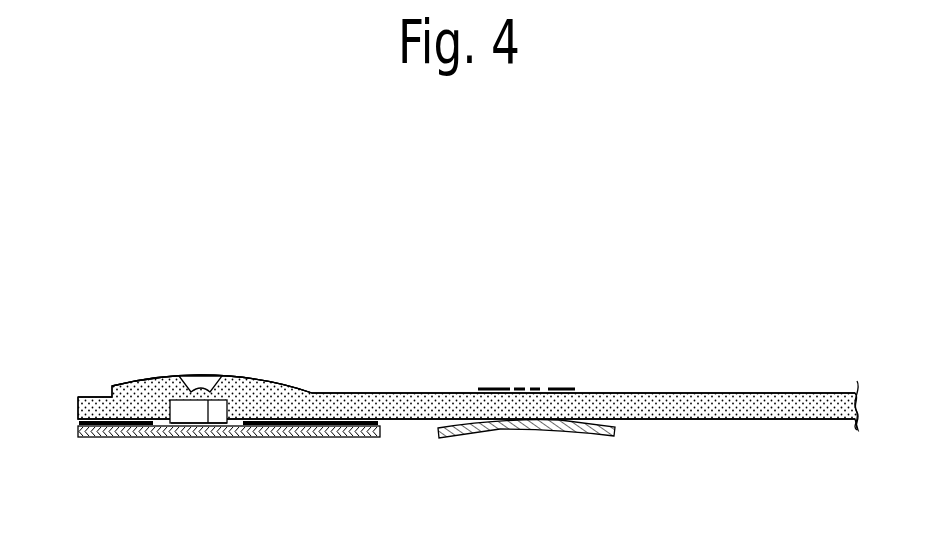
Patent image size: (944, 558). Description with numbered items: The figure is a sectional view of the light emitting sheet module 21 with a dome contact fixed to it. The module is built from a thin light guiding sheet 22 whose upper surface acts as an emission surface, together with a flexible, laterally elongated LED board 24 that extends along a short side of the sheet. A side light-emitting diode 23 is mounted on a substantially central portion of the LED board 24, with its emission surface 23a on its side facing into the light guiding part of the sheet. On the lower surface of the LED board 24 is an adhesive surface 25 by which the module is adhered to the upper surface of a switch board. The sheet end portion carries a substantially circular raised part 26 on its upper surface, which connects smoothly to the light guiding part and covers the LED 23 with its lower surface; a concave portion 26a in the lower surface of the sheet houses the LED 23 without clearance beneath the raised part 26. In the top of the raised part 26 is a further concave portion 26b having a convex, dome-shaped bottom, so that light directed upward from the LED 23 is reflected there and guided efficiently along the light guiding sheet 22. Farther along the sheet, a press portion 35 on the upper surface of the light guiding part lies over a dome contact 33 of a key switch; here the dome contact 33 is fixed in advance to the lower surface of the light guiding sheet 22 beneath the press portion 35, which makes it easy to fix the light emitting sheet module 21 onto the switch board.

The light emitting sheet module 21 is at (652, 296).
The light guiding sheet 22 is at (778, 391).
The light emitting diode 23 is at (171, 399).
The emission surface 23a is at (226, 400).
The LED board 24 is at (78, 430).
The adhesive surface 25 is at (137, 439).
The raised part 26 is at (299, 387).
The concave portion 26a is at (172, 414).
The concave portion 26b is at (198, 376).
The dome contact 33 is at (583, 434).
The press portion 35 is at (494, 388).